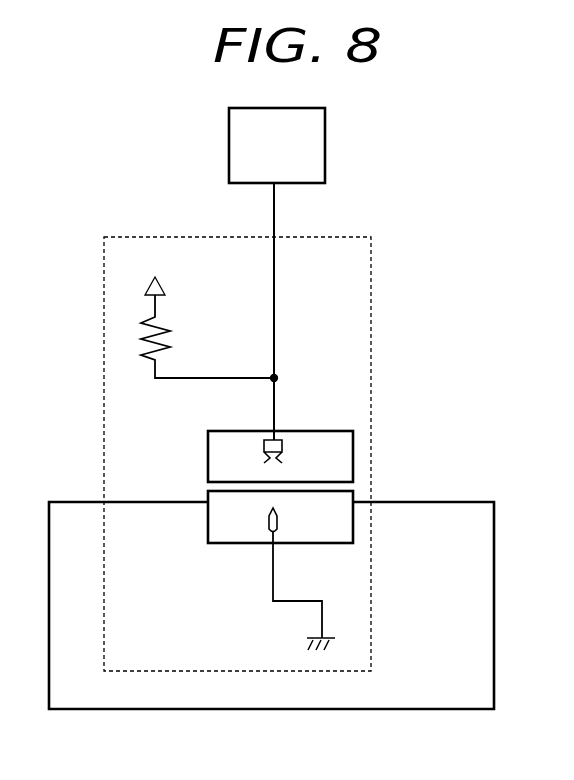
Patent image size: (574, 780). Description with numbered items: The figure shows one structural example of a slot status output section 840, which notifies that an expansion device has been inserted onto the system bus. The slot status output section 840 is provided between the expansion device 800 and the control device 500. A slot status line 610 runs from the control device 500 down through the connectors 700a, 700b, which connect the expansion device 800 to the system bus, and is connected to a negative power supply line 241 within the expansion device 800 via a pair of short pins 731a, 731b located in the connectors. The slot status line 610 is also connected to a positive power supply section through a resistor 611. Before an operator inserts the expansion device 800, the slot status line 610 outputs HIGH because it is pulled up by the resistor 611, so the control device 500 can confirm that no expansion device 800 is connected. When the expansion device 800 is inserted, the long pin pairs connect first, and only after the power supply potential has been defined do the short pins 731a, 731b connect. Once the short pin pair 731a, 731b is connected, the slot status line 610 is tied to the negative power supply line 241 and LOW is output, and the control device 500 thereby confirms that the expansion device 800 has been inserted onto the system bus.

The control device 500 is at (325, 148).
The slot status line 610 is at (276, 218).
The resistor 611 is at (161, 337).
The slot status output section 840 is at (372, 302).
The connector 700a is at (353, 447).
The connector 700b is at (353, 497).
The short pin 731a is at (283, 447).
The short pin 731b is at (276, 528).
The negative power supply line 241 is at (323, 637).
The expansion device 800 is at (472, 503).